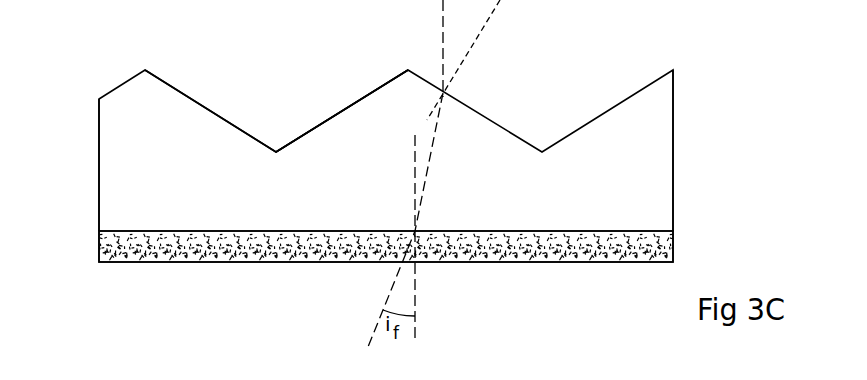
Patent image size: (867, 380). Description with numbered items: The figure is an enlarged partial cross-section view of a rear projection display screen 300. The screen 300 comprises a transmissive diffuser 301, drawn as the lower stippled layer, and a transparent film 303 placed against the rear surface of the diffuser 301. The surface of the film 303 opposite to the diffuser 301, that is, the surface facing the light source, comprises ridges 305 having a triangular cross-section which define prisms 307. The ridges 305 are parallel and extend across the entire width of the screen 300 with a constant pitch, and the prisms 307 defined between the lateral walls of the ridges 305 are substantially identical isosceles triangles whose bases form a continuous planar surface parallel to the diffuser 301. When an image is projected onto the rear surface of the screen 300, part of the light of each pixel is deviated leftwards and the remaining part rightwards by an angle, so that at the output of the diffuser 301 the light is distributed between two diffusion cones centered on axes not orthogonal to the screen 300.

The rear projection display screen 300 is at (716, 138).
The transmissive diffuser 301 is at (137, 245).
The transparent film 303 is at (140, 191).
The ridges 305 is at (276, 119).
The prisms 307 is at (352, 130).